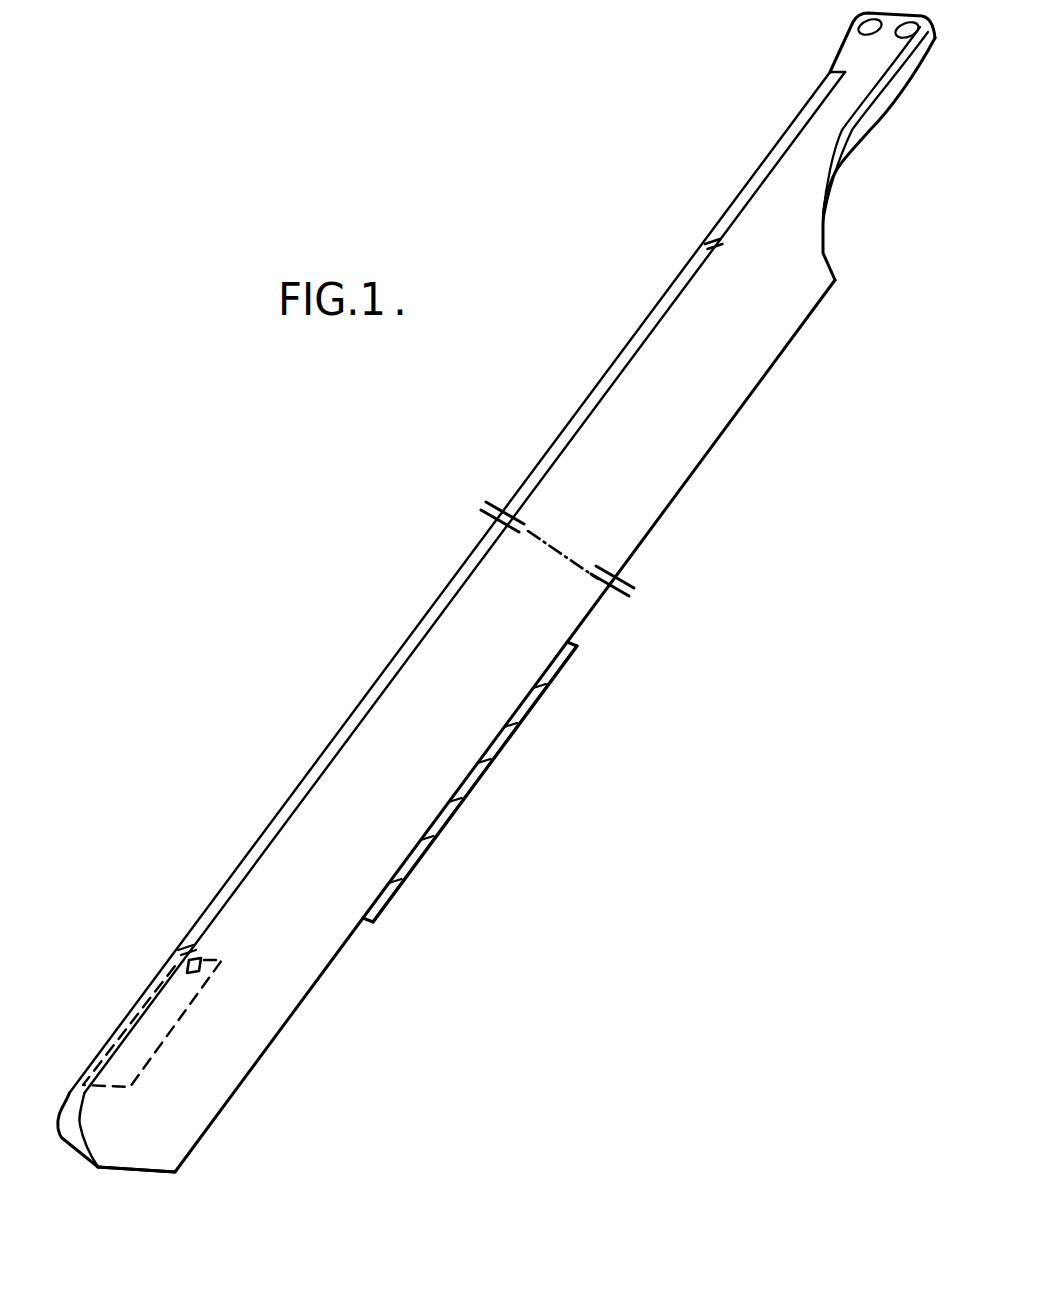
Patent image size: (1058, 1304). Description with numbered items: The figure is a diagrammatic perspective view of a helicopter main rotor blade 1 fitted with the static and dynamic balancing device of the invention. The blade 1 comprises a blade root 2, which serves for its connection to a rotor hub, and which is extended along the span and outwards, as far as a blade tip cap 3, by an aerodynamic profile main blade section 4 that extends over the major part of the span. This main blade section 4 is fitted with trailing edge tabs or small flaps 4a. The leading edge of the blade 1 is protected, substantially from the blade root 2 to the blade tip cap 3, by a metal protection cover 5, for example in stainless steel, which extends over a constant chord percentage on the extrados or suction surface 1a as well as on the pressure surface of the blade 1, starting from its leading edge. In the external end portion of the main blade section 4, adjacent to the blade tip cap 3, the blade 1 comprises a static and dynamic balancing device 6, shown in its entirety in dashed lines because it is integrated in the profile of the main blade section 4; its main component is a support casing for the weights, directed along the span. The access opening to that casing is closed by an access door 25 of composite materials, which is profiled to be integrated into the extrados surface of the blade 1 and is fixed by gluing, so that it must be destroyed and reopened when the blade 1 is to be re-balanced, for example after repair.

The blade 1 is at (456, 542).
The extrados or suction surface 1a is at (707, 367).
The blade root 2 is at (870, 68).
The blade tip cap 3 is at (142, 1137).
The main blade section 4 is at (452, 644).
The trailing edge tabs 4a is at (497, 740).
The metal protection cover 5 is at (572, 427).
The static and dynamic balancing device 6 is at (168, 1017).
The access door 25 is at (185, 962).